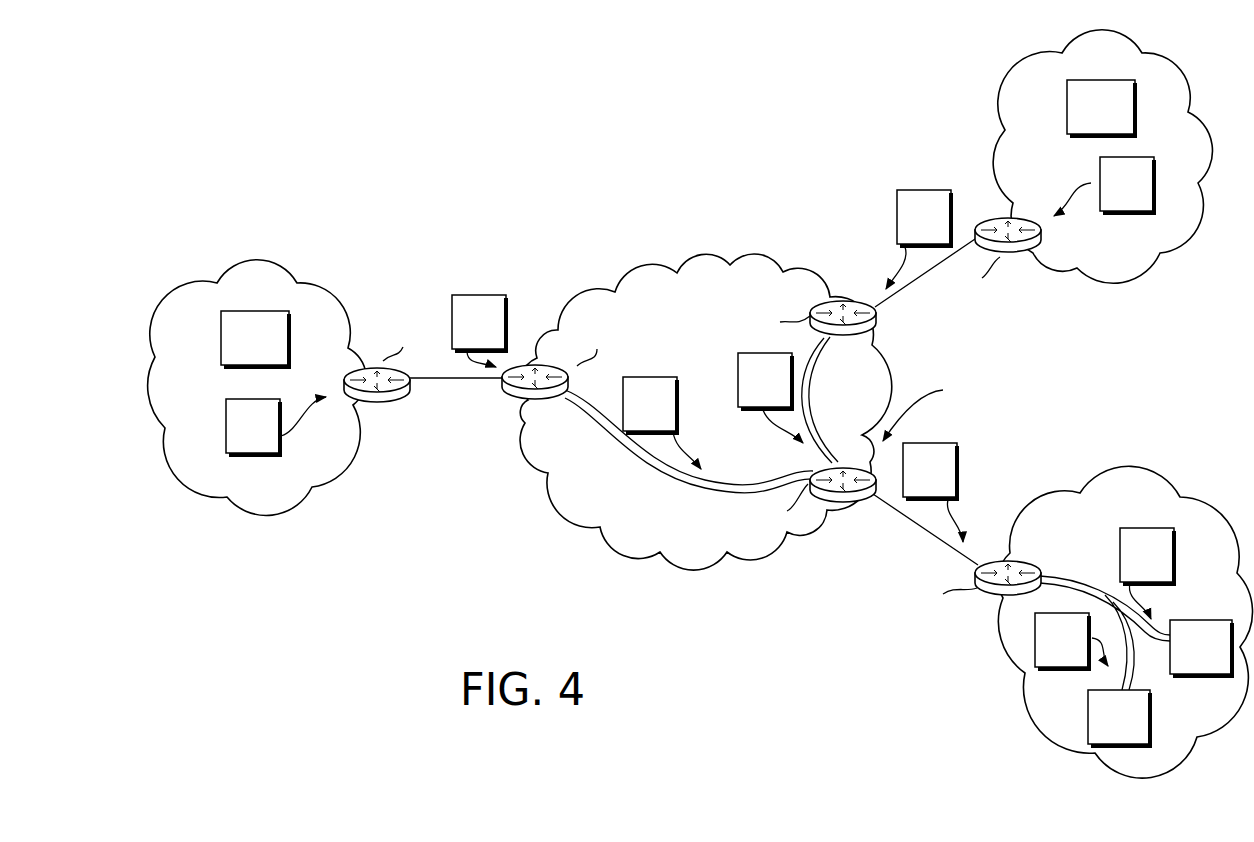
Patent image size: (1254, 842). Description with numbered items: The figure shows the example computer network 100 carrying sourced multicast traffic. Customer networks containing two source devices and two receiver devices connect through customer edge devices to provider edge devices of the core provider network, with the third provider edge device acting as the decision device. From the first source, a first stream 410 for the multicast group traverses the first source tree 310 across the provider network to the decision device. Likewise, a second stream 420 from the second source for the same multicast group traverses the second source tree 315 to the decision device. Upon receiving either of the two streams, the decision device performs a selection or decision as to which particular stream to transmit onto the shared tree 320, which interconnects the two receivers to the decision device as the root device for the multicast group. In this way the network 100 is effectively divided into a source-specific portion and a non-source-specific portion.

The computer network 100 is at (373, 169).
The first stream 410 is at (243, 454).
The second stream 420 is at (1120, 213).
The source tree 310 is at (657, 482).
The second source tree 315 is at (813, 418).
The shared tree 320 is at (1067, 577).